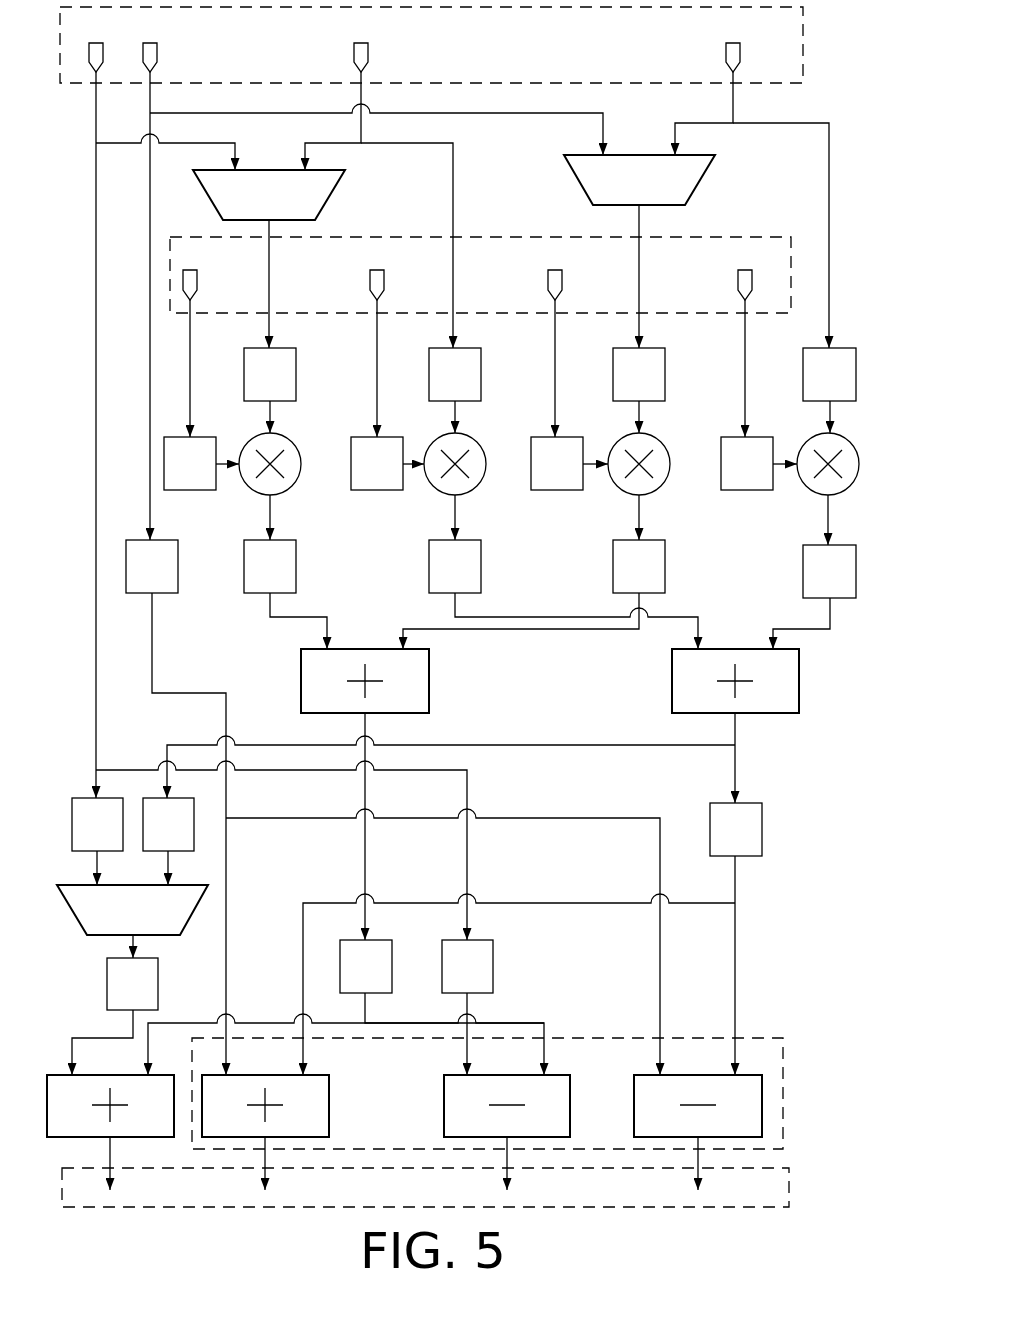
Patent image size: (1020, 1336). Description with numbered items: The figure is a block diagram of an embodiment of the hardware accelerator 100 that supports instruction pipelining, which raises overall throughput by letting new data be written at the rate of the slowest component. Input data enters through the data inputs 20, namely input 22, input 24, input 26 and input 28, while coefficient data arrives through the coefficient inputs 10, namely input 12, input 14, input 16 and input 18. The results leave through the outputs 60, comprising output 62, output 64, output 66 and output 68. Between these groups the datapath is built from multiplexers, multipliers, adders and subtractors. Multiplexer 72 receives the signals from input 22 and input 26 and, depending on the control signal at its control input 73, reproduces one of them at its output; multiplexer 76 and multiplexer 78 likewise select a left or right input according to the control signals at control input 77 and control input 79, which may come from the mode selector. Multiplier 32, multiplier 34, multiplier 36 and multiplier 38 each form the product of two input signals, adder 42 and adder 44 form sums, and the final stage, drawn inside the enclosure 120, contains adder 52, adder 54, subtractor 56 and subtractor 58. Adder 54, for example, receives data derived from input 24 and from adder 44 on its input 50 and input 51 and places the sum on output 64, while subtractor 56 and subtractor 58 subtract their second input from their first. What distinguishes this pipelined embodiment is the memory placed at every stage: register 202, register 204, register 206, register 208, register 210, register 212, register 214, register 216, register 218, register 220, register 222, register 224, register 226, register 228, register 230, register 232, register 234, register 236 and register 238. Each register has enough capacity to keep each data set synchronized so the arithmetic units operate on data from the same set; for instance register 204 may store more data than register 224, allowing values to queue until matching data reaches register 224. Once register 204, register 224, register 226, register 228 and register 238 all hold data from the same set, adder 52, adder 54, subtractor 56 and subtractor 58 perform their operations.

The coefficient inputs 10 is at (757, 237).
The input 12 is at (198, 291).
The input 14 is at (563, 291).
The input 16 is at (385, 291).
The input 18 is at (753, 291).
The data inputs 20 is at (803, 57).
The input 22 is at (104, 58).
The input 24 is at (158, 58).
The input 26 is at (369, 58).
The input 28 is at (741, 58).
The multiplier 32 is at (292, 490).
The multiplier 34 is at (483, 451).
The multiplier 36 is at (662, 484).
The multiplier 38 is at (818, 494).
The adder 42 is at (399, 709).
The adder 44 is at (765, 709).
The input 50 is at (212, 1057).
The input 51 is at (289, 1057).
The adder 52 is at (143, 1133).
The adder 54 is at (298, 1133).
The subtractor 56 is at (539, 1133).
The subtractor 58 is at (729, 1133).
The outputs 60 is at (637, 1207).
The output 62 is at (129, 1169).
The output 64 is at (284, 1169).
The output 66 is at (525, 1169).
The output 68 is at (717, 1169).
The multiplexer 72 is at (257, 207).
The control input 73 is at (212, 201).
The multiplexer 76 is at (627, 192).
The control input 77 is at (583, 187).
The multiplexer 78 is at (119, 922).
The control input 79 is at (76, 917).
The hardware accelerator 100 is at (122, 1228).
The adder/subtractor group 120 is at (776, 1038).
The register 202 is at (97, 824).
The register 204 is at (152, 566).
The register 206 is at (270, 374).
The register 208 is at (455, 374).
The register 210 is at (639, 374).
The register 212 is at (829, 374).
The register 214 is at (270, 566).
The register 216 is at (455, 566).
The register 218 is at (639, 566).
The register 220 is at (829, 571).
The register 222 is at (168, 824).
The register 224 is at (736, 829).
The register 226 is at (366, 966).
The register 228 is at (132, 984).
The register 230 is at (190, 463).
The register 232 is at (377, 463).
The register 234 is at (557, 463).
The register 236 is at (747, 463).
The register 238 is at (467, 966).